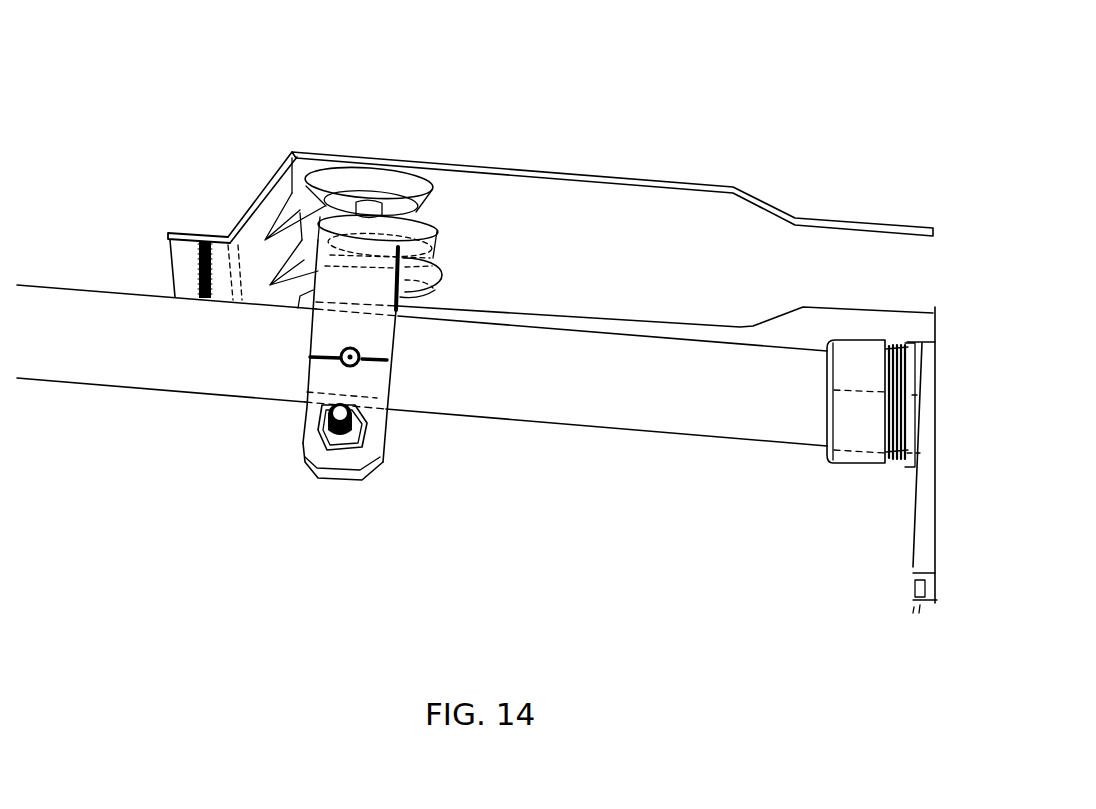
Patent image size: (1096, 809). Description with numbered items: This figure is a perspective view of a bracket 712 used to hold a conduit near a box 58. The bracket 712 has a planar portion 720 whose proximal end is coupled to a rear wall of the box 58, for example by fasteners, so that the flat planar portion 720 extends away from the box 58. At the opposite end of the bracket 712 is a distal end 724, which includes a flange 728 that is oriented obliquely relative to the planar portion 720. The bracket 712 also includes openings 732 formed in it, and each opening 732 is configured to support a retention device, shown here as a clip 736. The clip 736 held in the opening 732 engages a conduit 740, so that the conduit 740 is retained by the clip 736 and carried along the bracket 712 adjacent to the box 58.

The bracket 712 is at (492, 141).
The planar portion 720 is at (613, 206).
The distal end 724 is at (166, 259).
The flange 728 is at (250, 205).
The openings 732 is at (418, 293).
The clip 736 is at (358, 388).
The conduit 740 is at (620, 397).
The box 58 is at (920, 507).